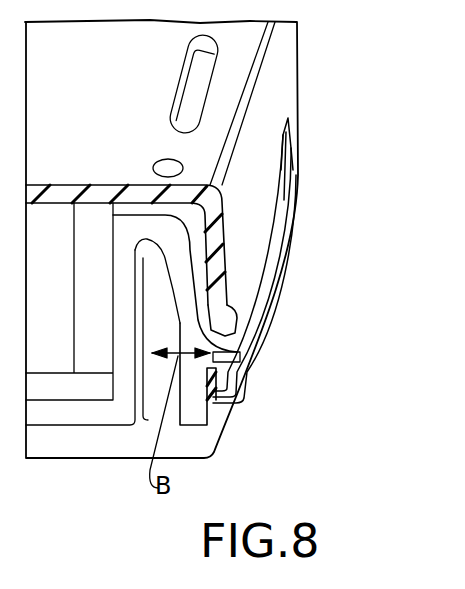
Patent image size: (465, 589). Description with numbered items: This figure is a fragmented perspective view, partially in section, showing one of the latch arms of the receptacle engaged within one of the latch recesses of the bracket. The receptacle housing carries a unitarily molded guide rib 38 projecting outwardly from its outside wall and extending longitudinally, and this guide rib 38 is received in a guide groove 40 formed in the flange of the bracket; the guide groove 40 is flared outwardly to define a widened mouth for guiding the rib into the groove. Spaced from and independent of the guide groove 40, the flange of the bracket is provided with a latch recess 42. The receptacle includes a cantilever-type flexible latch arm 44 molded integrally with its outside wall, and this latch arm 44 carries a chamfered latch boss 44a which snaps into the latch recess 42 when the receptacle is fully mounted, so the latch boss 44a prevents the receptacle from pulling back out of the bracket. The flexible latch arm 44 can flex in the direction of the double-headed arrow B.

The guide rib 38 is at (300, 190).
The guide groove 40 is at (302, 158).
The latch recess 42 is at (215, 337).
The flexible latch arm 44 is at (197, 408).
The chamfered latch boss 44a is at (212, 360).